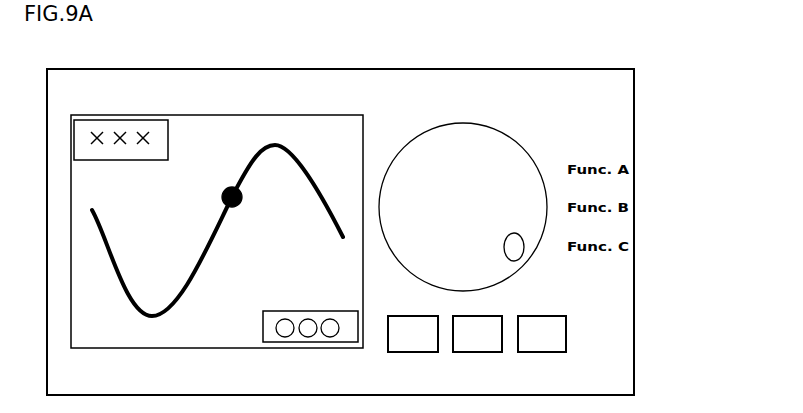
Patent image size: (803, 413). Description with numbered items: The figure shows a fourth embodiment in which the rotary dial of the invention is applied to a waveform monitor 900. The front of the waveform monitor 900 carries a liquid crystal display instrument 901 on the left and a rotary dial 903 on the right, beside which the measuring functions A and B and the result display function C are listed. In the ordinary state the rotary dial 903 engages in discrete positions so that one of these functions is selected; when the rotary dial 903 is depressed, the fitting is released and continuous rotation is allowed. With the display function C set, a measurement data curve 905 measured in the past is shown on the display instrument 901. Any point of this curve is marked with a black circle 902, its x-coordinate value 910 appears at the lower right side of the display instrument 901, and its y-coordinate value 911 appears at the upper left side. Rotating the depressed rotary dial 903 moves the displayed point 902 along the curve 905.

The waveform monitor 900 is at (634, 278).
The liquid crystal display instrument 901 is at (187, 332).
The black circle 902 is at (227, 190).
The rotary dial 903 is at (493, 173).
The measurement data curve 905 is at (200, 252).
The x-coordinate value 910 is at (303, 337).
The y-coordinate value 911 is at (117, 135).